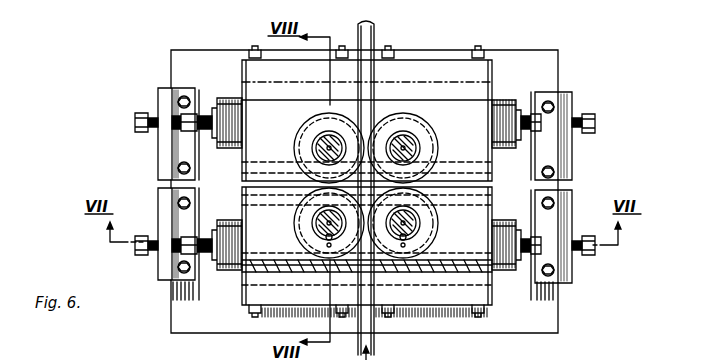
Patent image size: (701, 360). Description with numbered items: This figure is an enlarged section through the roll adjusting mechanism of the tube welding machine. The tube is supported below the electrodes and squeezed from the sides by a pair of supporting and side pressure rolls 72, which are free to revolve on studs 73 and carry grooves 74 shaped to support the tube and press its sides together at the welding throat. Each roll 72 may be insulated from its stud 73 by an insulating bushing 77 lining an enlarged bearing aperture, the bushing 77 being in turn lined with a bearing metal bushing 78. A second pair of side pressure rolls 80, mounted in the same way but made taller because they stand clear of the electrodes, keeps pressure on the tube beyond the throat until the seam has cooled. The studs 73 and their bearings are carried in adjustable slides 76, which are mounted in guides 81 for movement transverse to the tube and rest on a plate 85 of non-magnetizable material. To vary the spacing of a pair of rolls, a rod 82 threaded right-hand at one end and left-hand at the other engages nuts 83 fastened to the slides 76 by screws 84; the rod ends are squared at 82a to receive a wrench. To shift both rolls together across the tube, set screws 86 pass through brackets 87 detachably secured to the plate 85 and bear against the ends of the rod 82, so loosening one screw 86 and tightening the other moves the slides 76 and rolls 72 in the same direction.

The supporting and side pressure rolls 72 is at (305, 216).
The studs or spindles 73 is at (328, 240).
The grooves 74 is at (330, 250).
The adjustable slides 76 is at (248, 155).
The insulating bushing 77 is at (320, 223).
The bearing metal bushing 78 is at (333, 230).
The side pressure rolls 80 is at (305, 140).
The guides 81 is at (425, 70).
The rod 82 is at (210, 115).
The squared ends of rod 82a is at (184, 101).
The nuts 83 is at (236, 98).
The screws 84 is at (212, 143).
The plate 85 is at (555, 323).
The set screws 86 is at (135, 118).
The brackets 87 is at (160, 100).